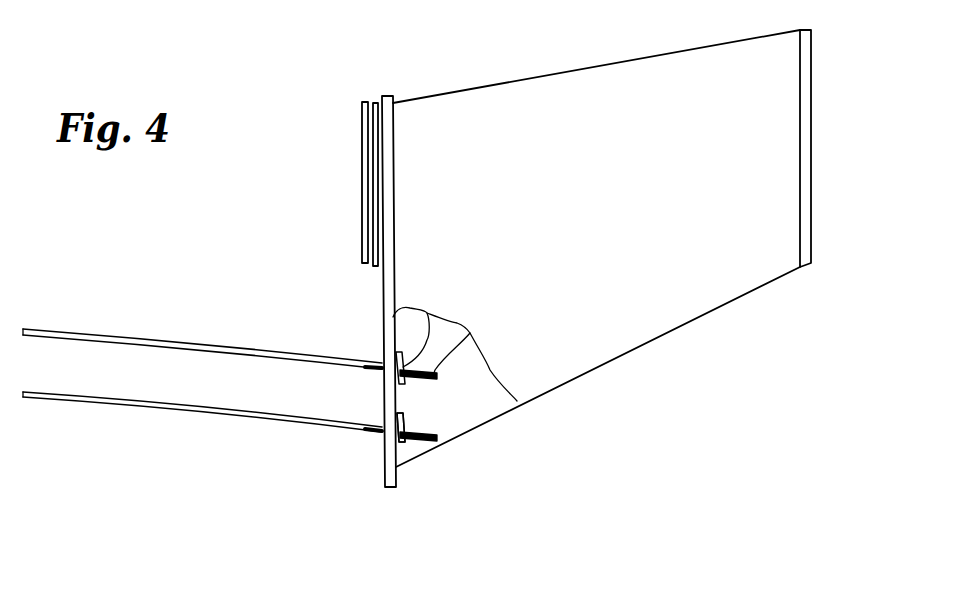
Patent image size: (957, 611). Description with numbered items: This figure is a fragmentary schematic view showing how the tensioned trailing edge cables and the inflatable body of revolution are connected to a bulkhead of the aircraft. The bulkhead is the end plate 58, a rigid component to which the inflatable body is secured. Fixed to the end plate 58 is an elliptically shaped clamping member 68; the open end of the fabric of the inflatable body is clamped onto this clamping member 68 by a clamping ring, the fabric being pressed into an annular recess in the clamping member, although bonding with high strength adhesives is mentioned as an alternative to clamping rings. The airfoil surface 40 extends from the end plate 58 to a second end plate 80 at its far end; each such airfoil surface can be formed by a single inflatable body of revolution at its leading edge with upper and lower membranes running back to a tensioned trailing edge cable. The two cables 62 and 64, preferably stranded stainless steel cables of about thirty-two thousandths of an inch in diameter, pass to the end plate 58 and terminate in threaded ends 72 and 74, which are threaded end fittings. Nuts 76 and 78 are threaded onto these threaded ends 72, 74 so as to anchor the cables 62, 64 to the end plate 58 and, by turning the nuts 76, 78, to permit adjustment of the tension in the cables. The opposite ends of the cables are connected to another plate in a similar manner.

The airfoil surface 40 is at (682, 65).
The end plate 80 is at (808, 155).
The clamping member 68 is at (362, 134).
The end plate 58 is at (384, 290).
The cable 62 is at (88, 333).
The cable 64 is at (152, 410).
The threaded end 72 is at (470, 333).
The threaded end 74 is at (429, 434).
The nut 76 is at (427, 313).
The nut 78 is at (405, 441).